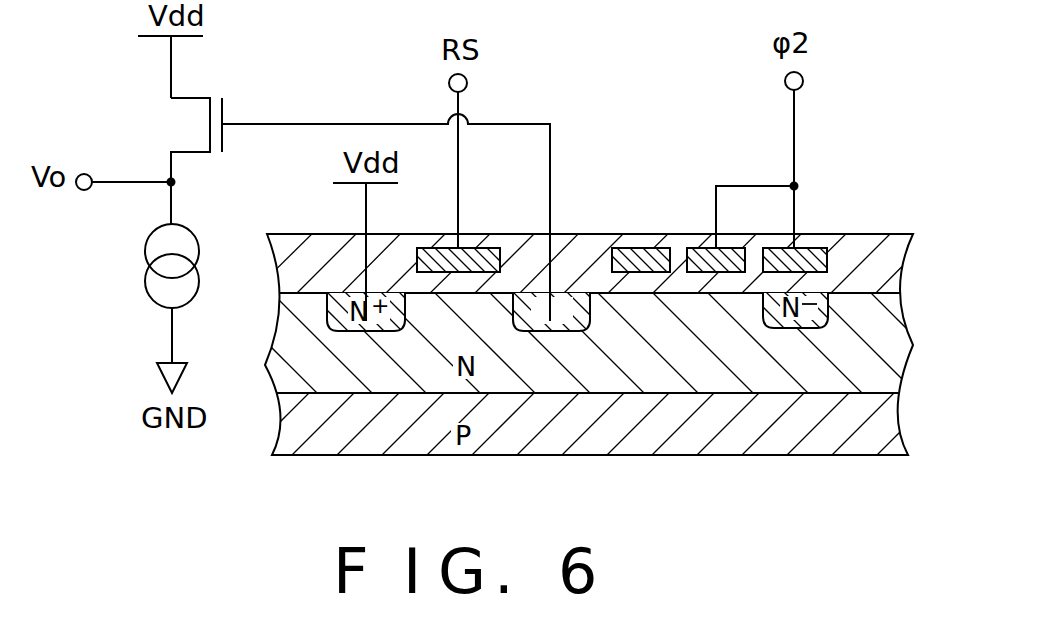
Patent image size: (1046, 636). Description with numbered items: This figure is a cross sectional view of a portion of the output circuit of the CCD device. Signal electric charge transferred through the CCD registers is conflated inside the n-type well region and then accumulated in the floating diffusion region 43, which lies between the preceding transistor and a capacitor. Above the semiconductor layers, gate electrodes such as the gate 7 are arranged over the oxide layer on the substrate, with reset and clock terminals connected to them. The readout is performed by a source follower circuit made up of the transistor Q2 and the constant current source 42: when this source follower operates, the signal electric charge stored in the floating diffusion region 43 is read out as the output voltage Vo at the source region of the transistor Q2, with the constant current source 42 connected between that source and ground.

The constant current source 42 is at (138, 252).
The floating diffusion region 43 is at (586, 250).
The gate electrode 7 is at (637, 248).
The transistor Q2 is at (182, 125).